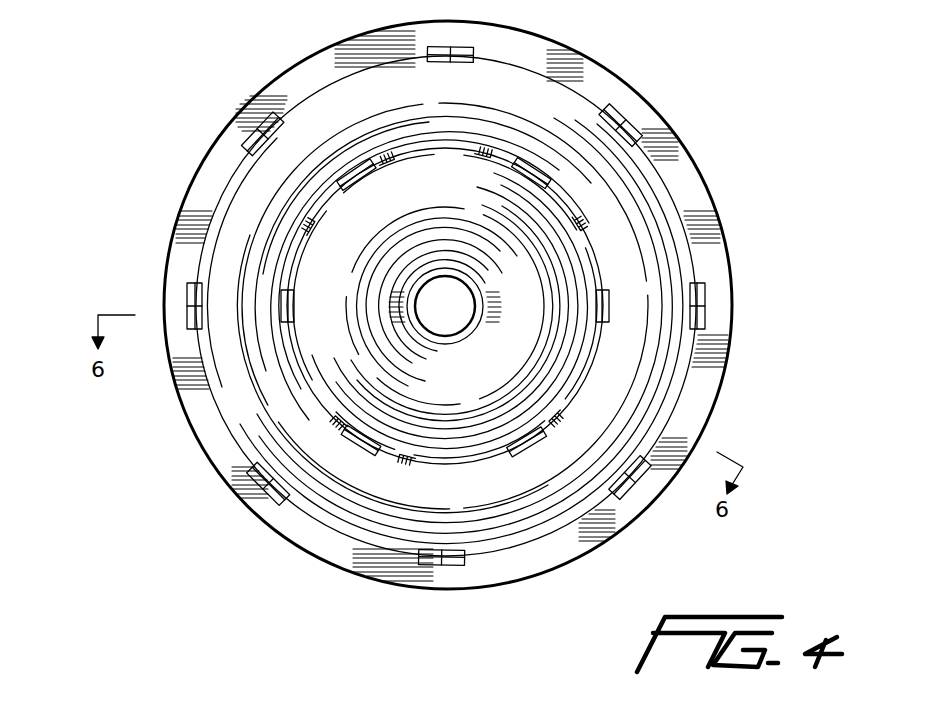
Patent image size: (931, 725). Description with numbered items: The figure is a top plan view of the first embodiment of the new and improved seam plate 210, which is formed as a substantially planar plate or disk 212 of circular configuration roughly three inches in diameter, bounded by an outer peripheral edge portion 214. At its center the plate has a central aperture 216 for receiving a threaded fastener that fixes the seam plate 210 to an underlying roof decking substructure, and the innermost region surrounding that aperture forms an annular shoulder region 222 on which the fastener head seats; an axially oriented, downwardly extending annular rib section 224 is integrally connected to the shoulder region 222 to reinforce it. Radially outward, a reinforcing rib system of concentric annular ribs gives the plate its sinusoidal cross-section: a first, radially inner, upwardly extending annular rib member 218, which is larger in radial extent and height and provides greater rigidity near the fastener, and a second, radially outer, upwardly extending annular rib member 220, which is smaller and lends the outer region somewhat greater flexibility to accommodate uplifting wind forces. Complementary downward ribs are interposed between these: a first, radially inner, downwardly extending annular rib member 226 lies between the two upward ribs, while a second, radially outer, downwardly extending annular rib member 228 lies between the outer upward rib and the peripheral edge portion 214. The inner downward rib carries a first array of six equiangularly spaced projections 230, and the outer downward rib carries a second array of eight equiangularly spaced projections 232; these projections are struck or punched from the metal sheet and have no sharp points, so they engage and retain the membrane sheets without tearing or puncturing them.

The seam plate 210 is at (118, 178).
The plate or disk 212 is at (660, 227).
The outer peripheral edge portion 214 is at (737, 308).
The central aperture 216 is at (628, 128).
The first, radially inner, upwardly extending annular rib member 218 is at (350, 347).
The second, radially outer, upwardly extending annular rib member 220 is at (240, 260).
The annular shoulder region 222 is at (431, 343).
The axially oriented, downwardly extending annular rib section 224 is at (452, 285).
The first, radially inner, downwardly extending annular rib member 226 is at (487, 457).
The second, radially outer, downwardly extending annular rib member 228 is at (683, 387).
The downwardly extending projections 230 is at (363, 176).
The downwardly extending projections 232 is at (463, 287).